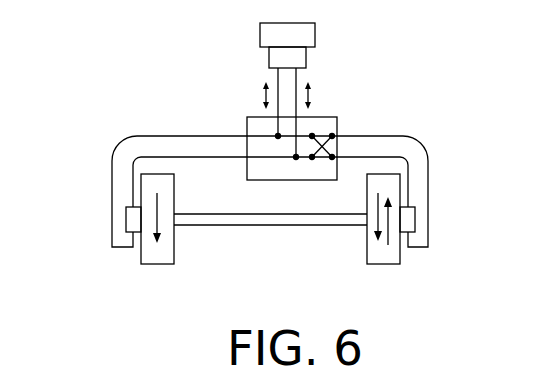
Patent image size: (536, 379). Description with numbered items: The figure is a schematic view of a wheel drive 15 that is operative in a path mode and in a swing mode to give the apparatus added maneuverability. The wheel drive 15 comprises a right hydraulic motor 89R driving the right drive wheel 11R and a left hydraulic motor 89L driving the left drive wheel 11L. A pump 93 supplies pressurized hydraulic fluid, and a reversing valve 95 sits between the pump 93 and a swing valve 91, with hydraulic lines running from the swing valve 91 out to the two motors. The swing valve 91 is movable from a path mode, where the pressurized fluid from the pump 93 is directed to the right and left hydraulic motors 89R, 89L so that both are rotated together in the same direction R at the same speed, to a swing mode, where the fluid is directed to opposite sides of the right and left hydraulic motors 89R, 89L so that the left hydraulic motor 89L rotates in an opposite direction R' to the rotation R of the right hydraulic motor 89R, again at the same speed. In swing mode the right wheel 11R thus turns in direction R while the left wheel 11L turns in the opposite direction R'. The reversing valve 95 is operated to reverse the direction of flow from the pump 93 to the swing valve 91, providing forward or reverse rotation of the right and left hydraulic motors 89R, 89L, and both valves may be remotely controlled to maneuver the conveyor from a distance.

The wheel drive 15 is at (378, 115).
The swing valve 91 is at (323, 145).
The pump 93 is at (260, 31).
The reversing valve 95 is at (306, 57).
The right drive wheel 11R is at (157, 265).
The left drive wheel 11L is at (385, 265).
The right hydraulic motor 89R is at (126, 222).
The left hydraulic motor 89L is at (415, 220).
The rotational direction R is at (270, 249).
The opposite rotational direction R' is at (434, 259).